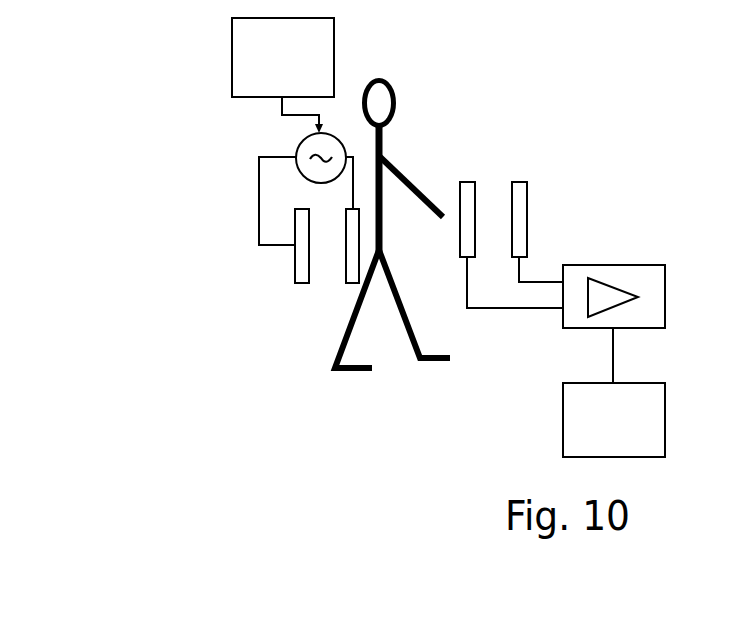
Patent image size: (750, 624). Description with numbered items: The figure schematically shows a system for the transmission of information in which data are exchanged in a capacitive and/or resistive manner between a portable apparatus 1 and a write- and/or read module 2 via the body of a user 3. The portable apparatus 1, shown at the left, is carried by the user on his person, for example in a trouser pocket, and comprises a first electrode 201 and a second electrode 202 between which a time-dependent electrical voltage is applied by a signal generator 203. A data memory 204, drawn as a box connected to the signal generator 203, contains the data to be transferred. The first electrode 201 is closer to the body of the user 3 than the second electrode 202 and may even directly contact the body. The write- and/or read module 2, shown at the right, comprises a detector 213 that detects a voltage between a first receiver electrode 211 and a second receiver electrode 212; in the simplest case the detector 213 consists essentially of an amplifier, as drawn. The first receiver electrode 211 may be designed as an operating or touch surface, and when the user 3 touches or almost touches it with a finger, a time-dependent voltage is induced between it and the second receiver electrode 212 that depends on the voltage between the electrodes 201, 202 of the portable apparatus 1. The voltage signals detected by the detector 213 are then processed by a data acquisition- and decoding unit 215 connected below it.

The portable apparatus 1 is at (193, 213).
The write- and/or read module 2 is at (666, 169).
The user 3 is at (330, 362).
The first electrode 201 is at (346, 262).
The second electrode 202 is at (295, 262).
The signal generator 203 is at (310, 147).
The data memory 204 is at (247, 45).
The first receiver electrode 211 is at (475, 207).
The second receiver electrode 212 is at (527, 203).
The detector 213 is at (627, 273).
The data acquisition- and decoding unit 215 is at (576, 423).